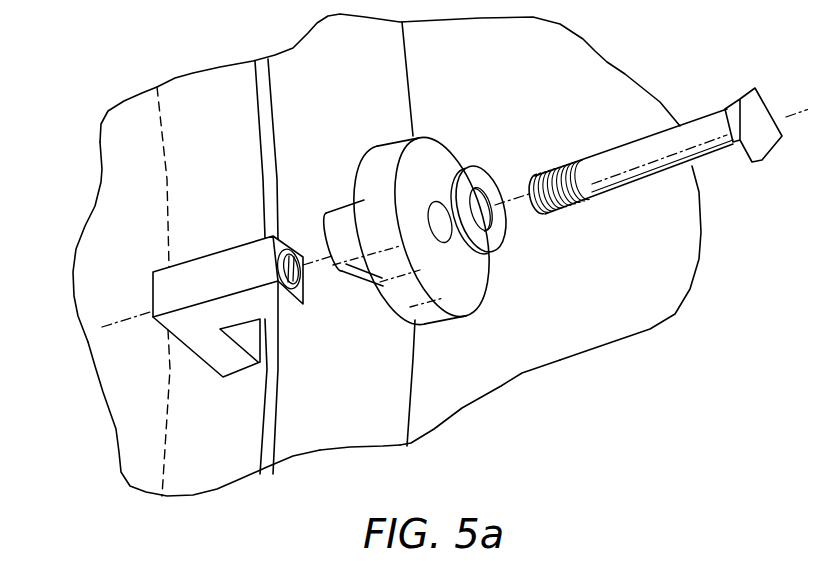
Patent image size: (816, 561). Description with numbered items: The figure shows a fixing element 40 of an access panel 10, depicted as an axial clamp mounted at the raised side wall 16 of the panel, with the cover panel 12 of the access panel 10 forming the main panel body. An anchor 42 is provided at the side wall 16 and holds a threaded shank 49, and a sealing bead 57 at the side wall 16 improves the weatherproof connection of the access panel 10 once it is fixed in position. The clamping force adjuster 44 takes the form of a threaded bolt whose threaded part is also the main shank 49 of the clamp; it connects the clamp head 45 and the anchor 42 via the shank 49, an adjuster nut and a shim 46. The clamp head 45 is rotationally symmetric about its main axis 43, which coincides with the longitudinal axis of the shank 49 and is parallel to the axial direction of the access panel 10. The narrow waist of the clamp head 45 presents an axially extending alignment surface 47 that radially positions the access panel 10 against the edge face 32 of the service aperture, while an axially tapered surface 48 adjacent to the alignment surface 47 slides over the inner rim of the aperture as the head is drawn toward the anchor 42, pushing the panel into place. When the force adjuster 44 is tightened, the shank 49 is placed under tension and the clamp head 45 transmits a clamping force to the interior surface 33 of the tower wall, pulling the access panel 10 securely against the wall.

The access panel 10 is at (126, 152).
The cover panel 12 is at (83, 230).
The side wall 16 is at (214, 481).
The edge face 32 is at (338, 439).
The interior surface 33 is at (541, 342).
The fixing element 40 is at (682, 266).
The anchor 42 is at (170, 326).
The main axis 43 is at (318, 262).
The clamping force adjuster 44 is at (738, 100).
The clamp head 45 is at (434, 152).
The shim 46 is at (500, 249).
The alignment surface 47 is at (353, 210).
The axially tapered surface 48 is at (333, 236).
The threaded shank 49 is at (648, 178).
The sealing bead 57 is at (268, 108).